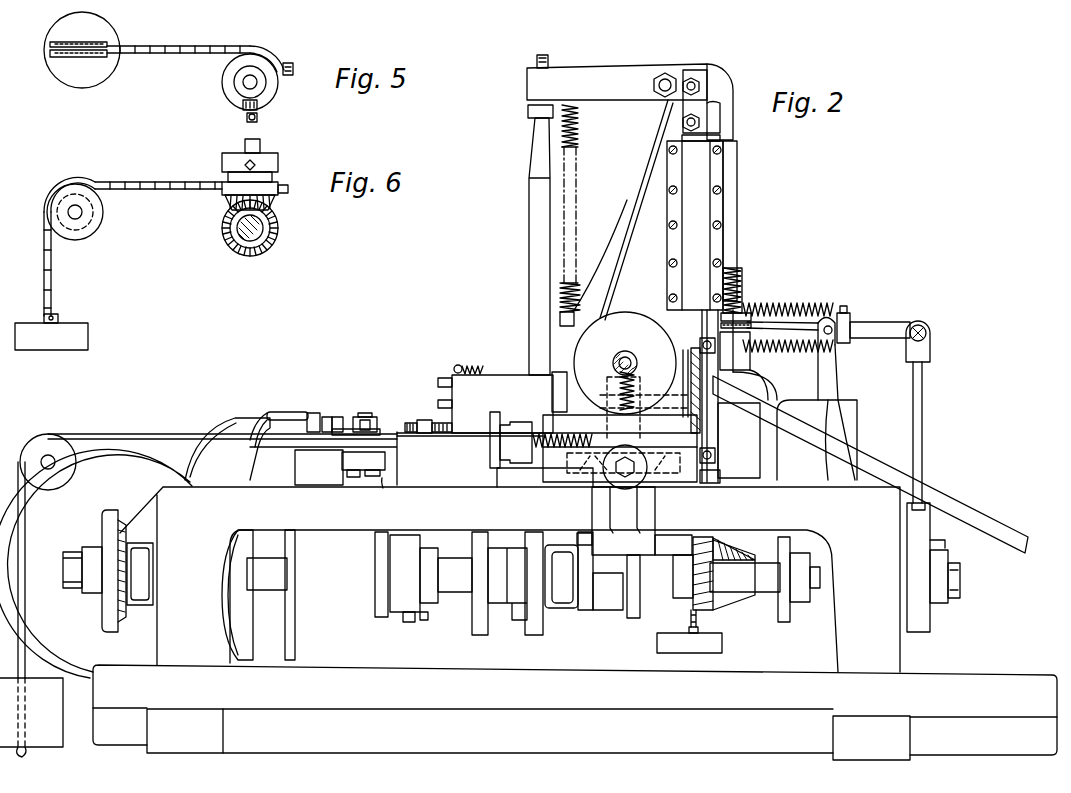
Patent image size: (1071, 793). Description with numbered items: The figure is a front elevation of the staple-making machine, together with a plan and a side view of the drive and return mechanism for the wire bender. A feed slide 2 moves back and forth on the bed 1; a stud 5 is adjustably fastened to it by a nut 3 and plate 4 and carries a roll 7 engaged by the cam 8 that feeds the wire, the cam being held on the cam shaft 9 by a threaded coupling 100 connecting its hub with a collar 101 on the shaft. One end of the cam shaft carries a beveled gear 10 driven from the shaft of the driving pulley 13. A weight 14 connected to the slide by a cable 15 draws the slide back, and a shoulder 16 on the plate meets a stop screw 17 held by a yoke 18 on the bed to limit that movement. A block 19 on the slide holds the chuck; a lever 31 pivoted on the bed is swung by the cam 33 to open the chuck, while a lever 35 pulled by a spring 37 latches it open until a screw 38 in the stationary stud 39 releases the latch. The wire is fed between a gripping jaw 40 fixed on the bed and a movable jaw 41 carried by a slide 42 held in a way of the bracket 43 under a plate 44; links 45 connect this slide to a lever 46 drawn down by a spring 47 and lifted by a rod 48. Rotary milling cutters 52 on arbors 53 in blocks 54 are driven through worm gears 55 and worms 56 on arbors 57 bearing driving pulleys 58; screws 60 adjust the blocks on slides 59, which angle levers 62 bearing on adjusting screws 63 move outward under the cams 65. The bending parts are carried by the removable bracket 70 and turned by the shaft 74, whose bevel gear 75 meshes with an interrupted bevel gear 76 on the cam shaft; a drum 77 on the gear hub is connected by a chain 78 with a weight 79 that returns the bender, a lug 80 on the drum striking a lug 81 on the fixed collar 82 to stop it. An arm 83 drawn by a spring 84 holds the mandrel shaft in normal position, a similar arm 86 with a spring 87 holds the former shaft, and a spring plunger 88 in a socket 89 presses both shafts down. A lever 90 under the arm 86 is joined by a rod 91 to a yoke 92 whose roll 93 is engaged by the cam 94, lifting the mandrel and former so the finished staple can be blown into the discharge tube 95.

In FIG. 2, the bed 1 is at (575, 623).
In FIG. 2, the feed slide 2 is at (392, 429).
In FIG. 2, the nut 3 is at (368, 418).
In FIG. 2, the plate 4 is at (355, 417).
In FIG. 2, the stud 5 is at (383, 493).
In FIG. 2, the block 7 is at (342, 460).
In FIG. 2, the cam 8 is at (324, 596).
In FIG. 2, the cam shaft 9 is at (272, 592).
In FIG. 2, the beveled gear 10 is at (102, 620).
In FIG. 2, the driving pulley 13 is at (96, 460).
In FIG. 2, the weight 14 is at (31, 609).
In FIG. 2, the cable 15 is at (152, 436).
In FIG. 2, the shoulder 16 is at (326, 417).
In FIG. 2, the stop screw 17 is at (311, 412).
In FIG. 2, the yoke 18 is at (227, 449).
In FIG. 2, the block 19 is at (482, 404).
In FIG. 2, the lever 31 is at (455, 560).
In FIG. 2, the cam 33 is at (472, 628).
In FIG. 2, the lever 35 is at (460, 366).
In FIG. 2, the spring 37 is at (480, 369).
In FIG. 2, the screw 38 is at (440, 433).
In FIG. 2, the stud 39 is at (424, 433).
In FIG. 2, the gripping jaw 40 is at (740, 440).
In FIG. 2, the complementary jaw 41 is at (745, 362).
In FIG. 2, the slide 42 is at (700, 305).
In FIG. 2, the bracket 43 is at (636, 210).
In FIG. 2, the plate 44 is at (702, 225).
In FIG. 2, the links 45 is at (728, 126).
In FIG. 2, the lever 46 is at (617, 82).
In FIG. 2, the spring 47 is at (580, 135).
In FIG. 2, the rod 48 is at (529, 215).
In FIG. 2, the rotary milling cutters 52 is at (691, 356).
In FIG. 2, the arbors 53 is at (590, 385).
In FIG. 2, the blocks 54 is at (620, 438).
In FIG. 2, the worm gears 55 is at (634, 392).
In FIG. 2, the worms 56 is at (620, 352).
In FIG. 2, the arbors 57 is at (632, 363).
In FIG. 2, the driving pulleys 58 is at (527, 628).
In FIG. 2, the slides 59 is at (690, 480).
In FIG. 2, the screws 60 is at (535, 470).
In FIG. 2, the angle levers 62 is at (625, 510).
In FIG. 2, the adjusting screws 63 is at (613, 475).
In FIG. 2, the cams 65 is at (634, 618).
In FIG. 2, the bracket 70 is at (817, 440).
In FIG. 5, the shaft 74 is at (242, 82).
In FIG. 6, the shaft 74 is at (260, 146).
In FIG. 6, the bevel gear 75 is at (272, 203).
In FIG. 2, the bevel gear 75 is at (738, 572).
In FIG. 6, the interrupted bevel gear 76 is at (262, 250).
In FIG. 2, the interrupted bevel gear 76 is at (712, 600).
In FIG. 6, the drum 77 is at (280, 188).
In FIG. 2, the drum 77 is at (750, 540).
In FIG. 5, the chain 78 is at (165, 56).
In FIG. 6, the chain 78 is at (162, 190).
In FIG. 2, the chain 78 is at (690, 615).
In FIG. 5, the weight 79 is at (90, 78).
In FIG. 6, the weight 79 is at (51, 332).
In FIG. 2, the weight 79 is at (689, 640).
In FIG. 5, the lug 80 is at (243, 108).
In FIG. 6, the lug 80 is at (240, 177).
In FIG. 5, the lug 81 is at (258, 117).
In FIG. 6, the lug 81 is at (256, 165).
In FIG. 5, the fixed collar 82 is at (284, 86).
In FIG. 6, the fixed collar 82 is at (222, 163).
In FIG. 2, the arm 83 is at (748, 320).
In FIG. 2, the spring 84 is at (830, 308).
In FIG. 2, the arm 86 is at (790, 310).
In FIG. 2, the spring 87 is at (803, 355).
In FIG. 2, the spring plunger 88 is at (742, 288).
In FIG. 2, the socket 89 is at (735, 268).
In FIG. 2, the lever 90 is at (886, 323).
In FIG. 2, the rod 91 is at (923, 418).
In FIG. 2, the yoke 92 is at (933, 545).
In FIG. 2, the roll 93 is at (918, 633).
In FIG. 2, the cam 94 is at (945, 590).
In FIG. 2, the discharge tube 95 is at (958, 492).
In FIG. 2, the threaded coupling 100 is at (378, 617).
In FIG. 2, the collar 101 is at (423, 620).